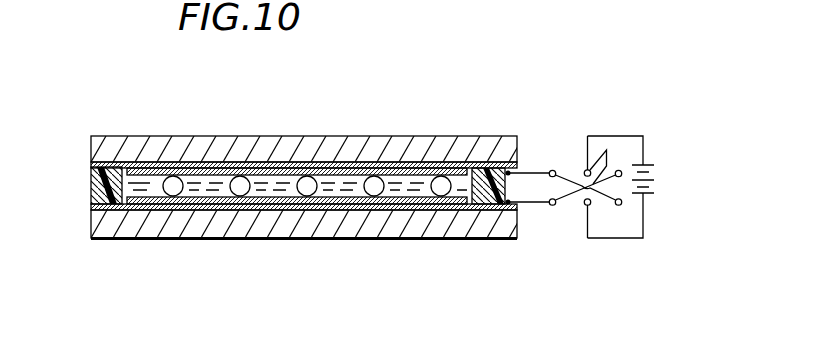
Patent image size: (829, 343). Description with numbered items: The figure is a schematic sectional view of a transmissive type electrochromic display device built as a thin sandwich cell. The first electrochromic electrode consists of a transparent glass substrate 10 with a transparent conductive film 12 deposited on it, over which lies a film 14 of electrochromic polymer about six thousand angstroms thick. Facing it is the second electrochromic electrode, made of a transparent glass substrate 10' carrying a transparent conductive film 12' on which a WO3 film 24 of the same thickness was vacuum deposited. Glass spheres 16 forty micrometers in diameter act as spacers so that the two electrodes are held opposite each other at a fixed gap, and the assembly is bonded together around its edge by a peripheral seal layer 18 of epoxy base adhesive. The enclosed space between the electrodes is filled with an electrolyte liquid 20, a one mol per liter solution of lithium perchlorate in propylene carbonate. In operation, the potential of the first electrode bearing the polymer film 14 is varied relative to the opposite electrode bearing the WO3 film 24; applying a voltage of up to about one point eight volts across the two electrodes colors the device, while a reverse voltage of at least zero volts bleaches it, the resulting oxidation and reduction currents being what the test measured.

The transparent glass substrate 10 is at (304, 133).
The transparent conductive film 12 is at (304, 136).
The electrochromic polymer film 14 is at (343, 171).
The glass spheres 16 is at (372, 176).
The peripheral seal layer 18 is at (90, 188).
The electrolyte liquid 20 is at (202, 205).
The transparent glass substrate 10' is at (304, 240).
The transparent conductive film 12' is at (304, 237).
The WO3 film 24 is at (398, 190).